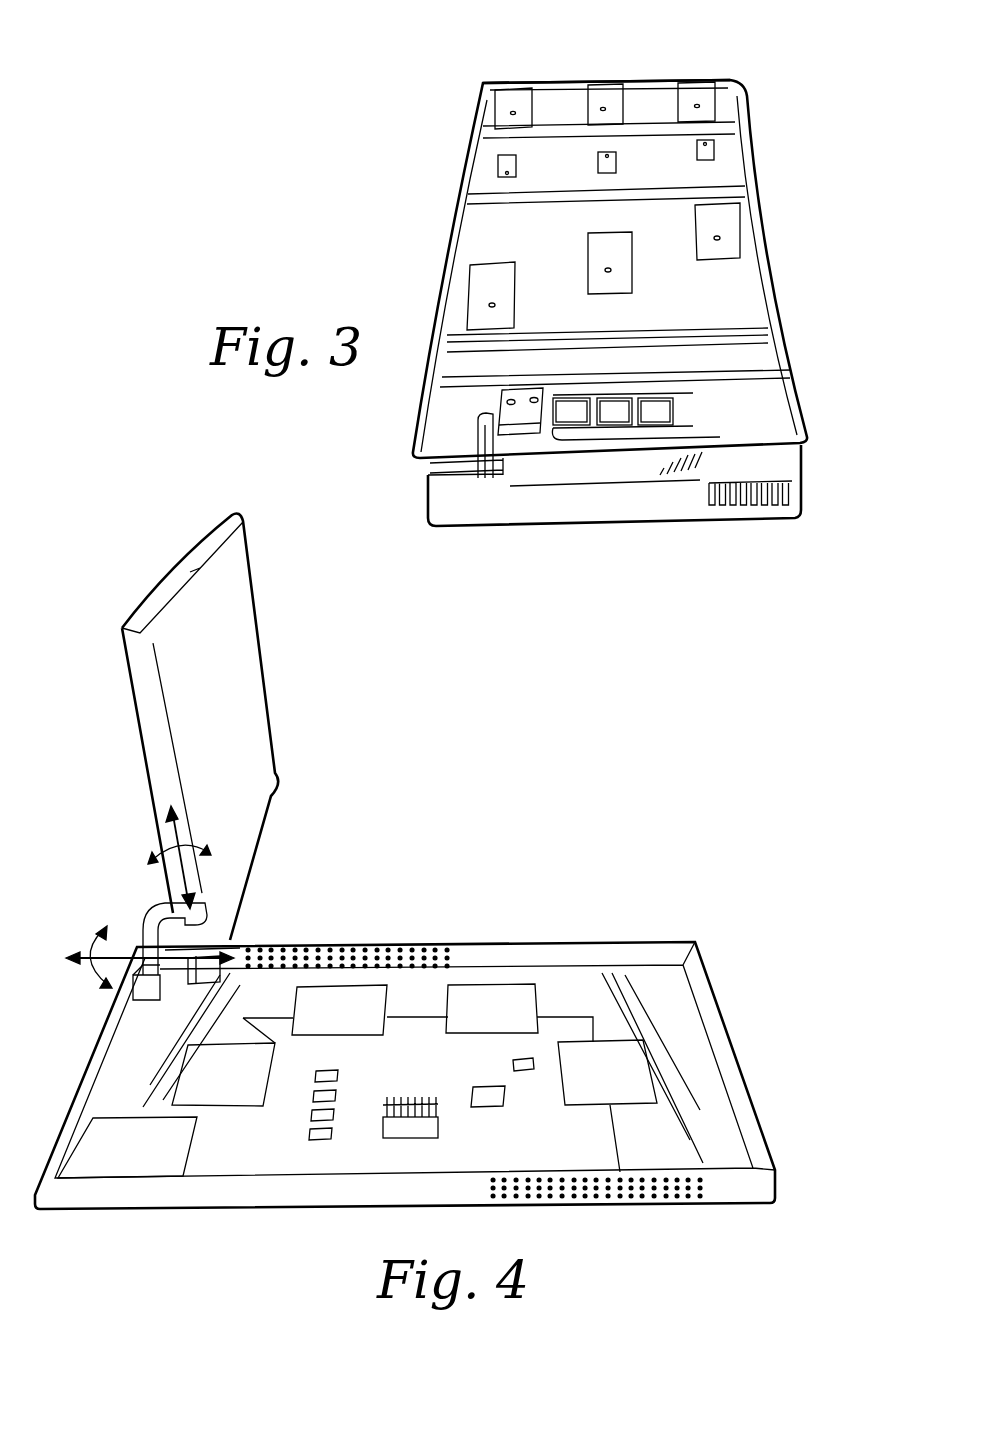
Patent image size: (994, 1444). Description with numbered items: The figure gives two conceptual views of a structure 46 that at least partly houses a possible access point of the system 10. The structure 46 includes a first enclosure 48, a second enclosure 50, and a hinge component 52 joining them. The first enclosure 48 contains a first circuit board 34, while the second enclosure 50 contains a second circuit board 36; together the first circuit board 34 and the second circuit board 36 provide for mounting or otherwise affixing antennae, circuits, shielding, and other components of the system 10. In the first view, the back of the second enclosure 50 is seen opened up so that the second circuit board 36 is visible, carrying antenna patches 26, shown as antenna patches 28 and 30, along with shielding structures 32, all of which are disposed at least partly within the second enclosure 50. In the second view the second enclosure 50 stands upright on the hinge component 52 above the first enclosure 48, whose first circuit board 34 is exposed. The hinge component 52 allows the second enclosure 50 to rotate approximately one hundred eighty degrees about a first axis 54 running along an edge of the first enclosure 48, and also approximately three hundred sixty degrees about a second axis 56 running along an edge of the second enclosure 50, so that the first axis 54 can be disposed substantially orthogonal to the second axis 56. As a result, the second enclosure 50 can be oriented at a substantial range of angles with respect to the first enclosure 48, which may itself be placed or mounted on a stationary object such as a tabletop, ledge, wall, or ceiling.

In FIG. 3, the system 10 is at (345, 135).
In FIG. 4, the system 10 is at (562, 730).
In FIG. 3, the antenna patches 26 is at (606, 70).
In FIG. 3, the antenna patch 28 is at (695, 90).
In FIG. 3, the antenna patch 30 is at (497, 176).
In FIG. 3, the shielding structures 32 is at (728, 128).
In FIG. 4, the first circuit board 34 is at (262, 1157).
In FIG. 3, the second circuit board 36 is at (768, 360).
In FIG. 3, the structure 46 is at (635, 524).
In FIG. 4, the structure 46 is at (411, 1065).
In FIG. 3, the first enclosure 48 is at (597, 506).
In FIG. 4, the first enclosure 48 is at (712, 1043).
In FIG. 3, the second enclosure 50 is at (619, 232).
In FIG. 4, the second enclosure 50 is at (262, 777).
In FIG. 3, the hinge component 52 is at (478, 444).
In FIG. 4, the hinge component 52 is at (147, 913).
In FIG. 4, the first axis 54 is at (137, 975).
In FIG. 4, the second axis 56 is at (158, 828).